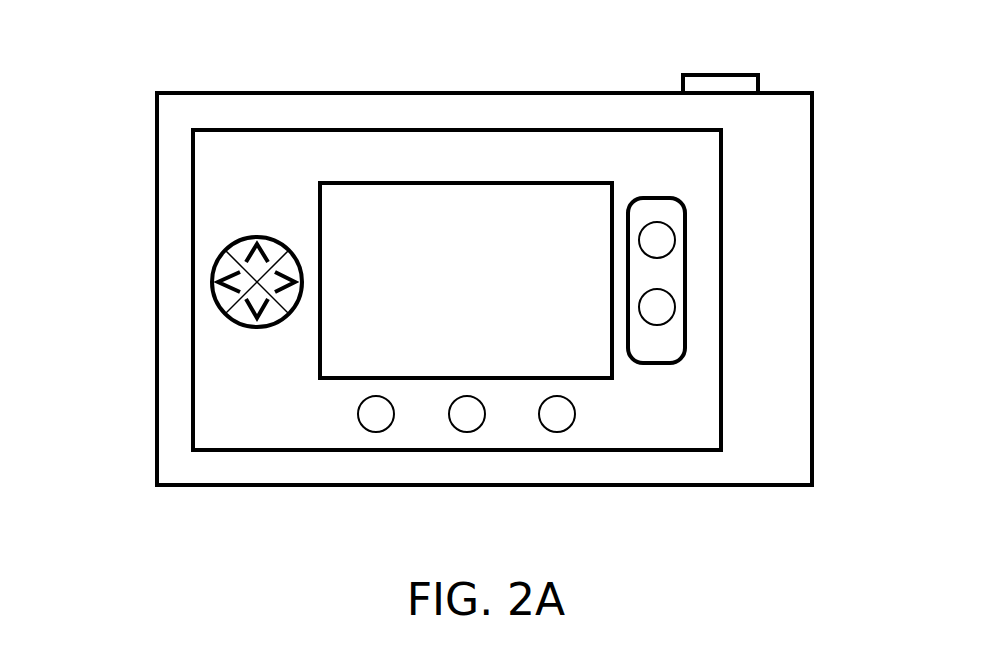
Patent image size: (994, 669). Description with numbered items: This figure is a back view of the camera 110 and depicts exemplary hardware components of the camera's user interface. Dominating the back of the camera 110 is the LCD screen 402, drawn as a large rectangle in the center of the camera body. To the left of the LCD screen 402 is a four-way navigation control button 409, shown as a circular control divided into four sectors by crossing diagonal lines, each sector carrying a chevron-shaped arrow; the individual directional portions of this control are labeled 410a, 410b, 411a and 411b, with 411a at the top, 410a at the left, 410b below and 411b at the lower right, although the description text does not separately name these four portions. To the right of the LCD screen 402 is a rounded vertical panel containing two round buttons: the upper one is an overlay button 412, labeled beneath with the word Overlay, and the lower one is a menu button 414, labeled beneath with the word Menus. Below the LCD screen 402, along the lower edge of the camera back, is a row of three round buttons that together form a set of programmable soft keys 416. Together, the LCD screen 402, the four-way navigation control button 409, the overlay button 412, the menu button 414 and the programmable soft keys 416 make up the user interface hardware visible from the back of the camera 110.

The camera 110 is at (630, 20).
The LCD screen 402 is at (506, 185).
The four-way navigation control button 409 is at (250, 198).
The left navigation button 410a is at (213, 275).
The down navigation button 410b is at (215, 300).
The up navigation button 411a is at (247, 240).
The right navigation button 411b is at (250, 328).
The overlay button 412 is at (667, 222).
The menu button 414 is at (668, 291).
The programmable soft keys 416 is at (557, 432).